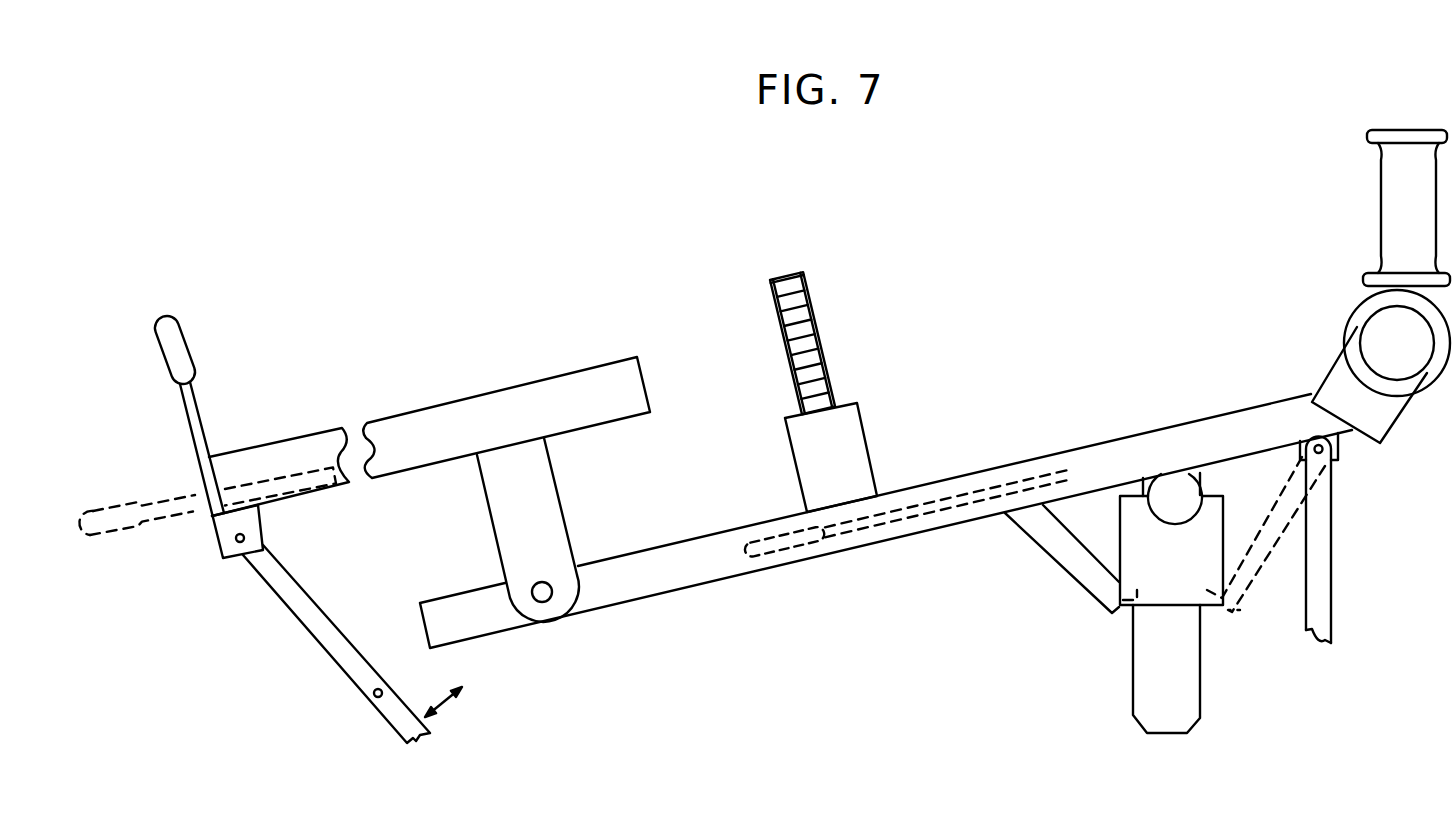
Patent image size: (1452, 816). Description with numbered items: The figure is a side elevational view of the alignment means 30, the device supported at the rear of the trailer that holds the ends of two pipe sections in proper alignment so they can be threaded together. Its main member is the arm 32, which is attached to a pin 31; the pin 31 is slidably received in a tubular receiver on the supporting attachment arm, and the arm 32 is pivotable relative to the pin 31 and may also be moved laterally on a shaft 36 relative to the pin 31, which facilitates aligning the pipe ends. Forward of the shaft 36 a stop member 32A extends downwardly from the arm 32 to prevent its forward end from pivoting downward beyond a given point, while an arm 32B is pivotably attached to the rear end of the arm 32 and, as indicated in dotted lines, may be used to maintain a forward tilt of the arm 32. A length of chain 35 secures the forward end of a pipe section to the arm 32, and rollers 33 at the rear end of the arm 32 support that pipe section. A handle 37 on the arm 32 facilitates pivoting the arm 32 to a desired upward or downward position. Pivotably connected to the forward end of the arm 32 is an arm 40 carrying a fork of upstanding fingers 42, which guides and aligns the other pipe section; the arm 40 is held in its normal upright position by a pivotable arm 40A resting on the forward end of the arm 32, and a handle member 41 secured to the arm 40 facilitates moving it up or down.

The alignment means 30 is at (1046, 216).
The pin 31 is at (1186, 688).
The arm 32 is at (660, 600).
The stop member 32A is at (1058, 553).
The arm 32B is at (1334, 533).
The rollers 33 is at (1390, 219).
The chain 35 is at (810, 283).
The shaft 36 is at (1182, 490).
The handle 37 is at (767, 562).
The arm 40 is at (492, 390).
The pivotable arm 40A is at (318, 632).
The handle member 41 is at (105, 538).
The upstanding fingers 42 is at (203, 406).